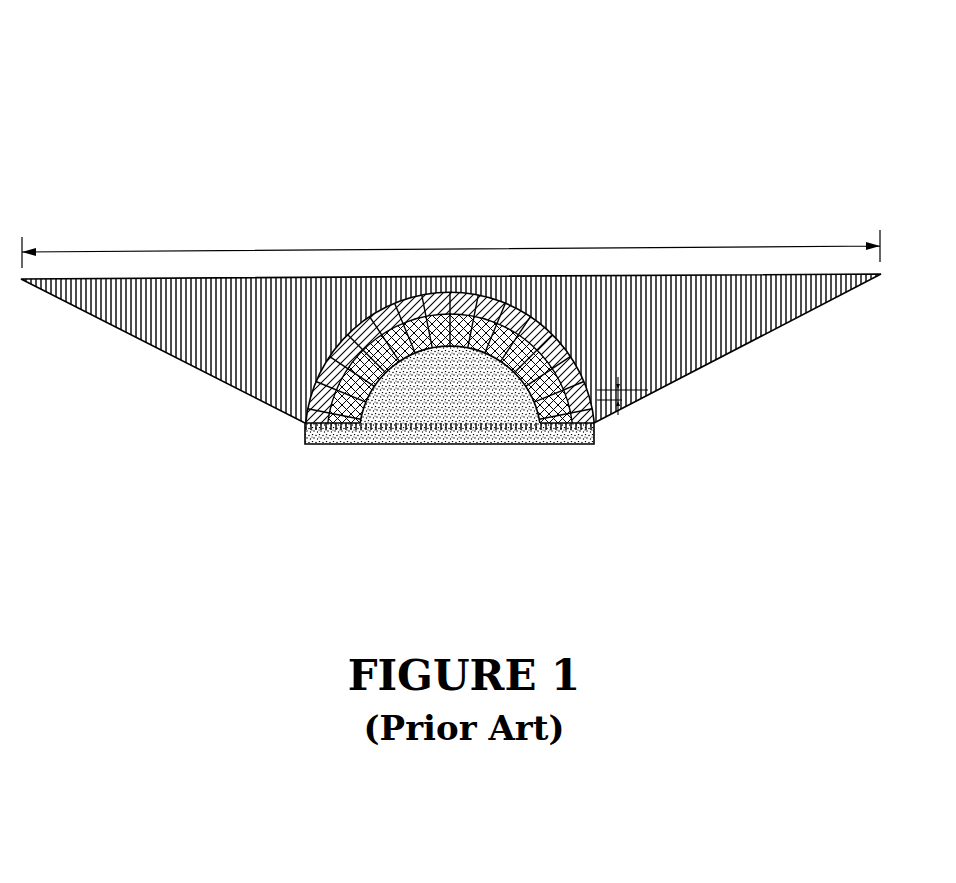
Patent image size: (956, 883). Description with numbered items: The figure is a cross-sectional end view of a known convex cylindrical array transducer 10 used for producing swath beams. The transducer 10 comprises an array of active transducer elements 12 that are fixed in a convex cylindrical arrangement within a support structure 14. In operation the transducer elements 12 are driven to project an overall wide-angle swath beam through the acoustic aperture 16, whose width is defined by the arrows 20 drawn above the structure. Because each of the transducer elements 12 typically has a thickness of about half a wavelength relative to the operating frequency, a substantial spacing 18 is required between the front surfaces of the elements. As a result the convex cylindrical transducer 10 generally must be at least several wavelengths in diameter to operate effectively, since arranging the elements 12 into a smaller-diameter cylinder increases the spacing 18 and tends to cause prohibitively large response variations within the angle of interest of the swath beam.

The convex cylindrical array transducer 10 is at (688, 131).
The active transducer elements 12 is at (392, 378).
The support structure 14 is at (462, 394).
The acoustic aperture 16 is at (198, 345).
The spacing 18 is at (648, 390).
The arrows 20 is at (451, 247).